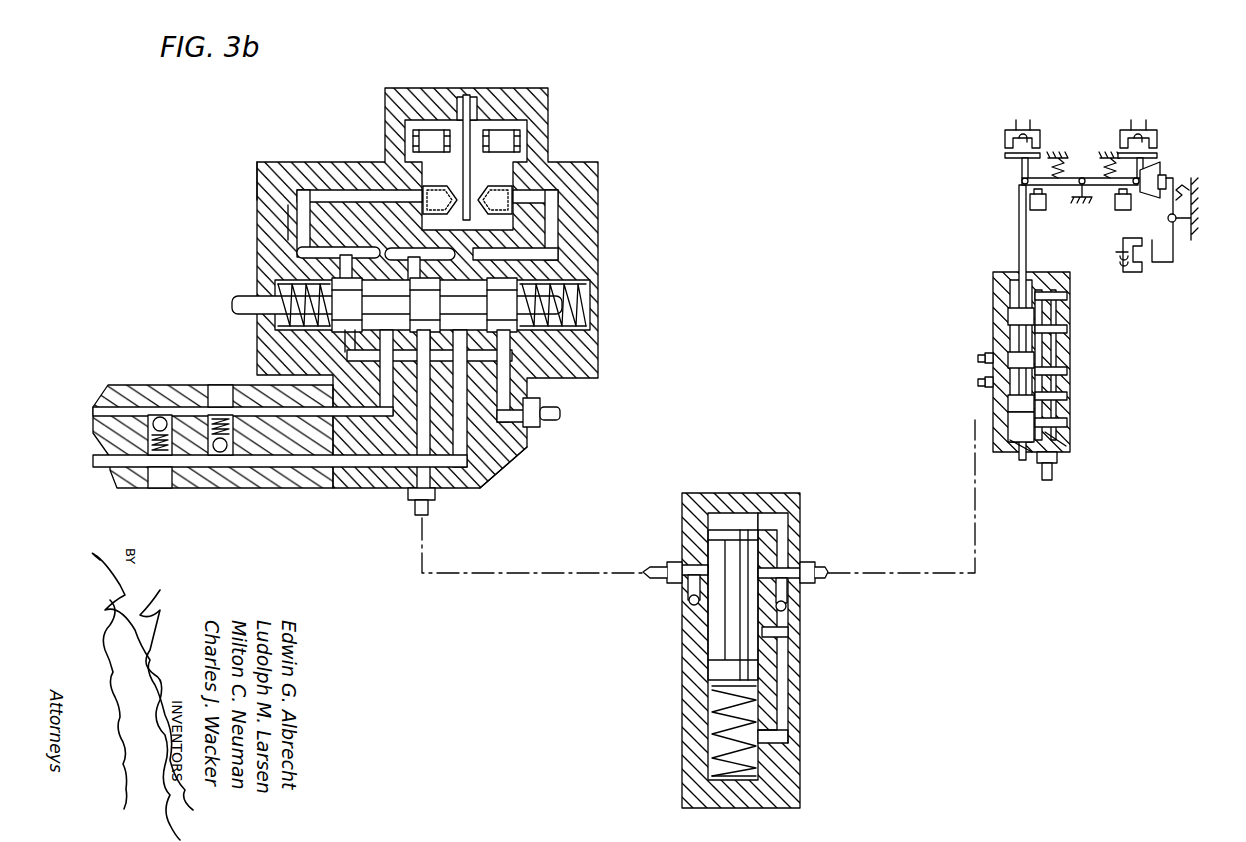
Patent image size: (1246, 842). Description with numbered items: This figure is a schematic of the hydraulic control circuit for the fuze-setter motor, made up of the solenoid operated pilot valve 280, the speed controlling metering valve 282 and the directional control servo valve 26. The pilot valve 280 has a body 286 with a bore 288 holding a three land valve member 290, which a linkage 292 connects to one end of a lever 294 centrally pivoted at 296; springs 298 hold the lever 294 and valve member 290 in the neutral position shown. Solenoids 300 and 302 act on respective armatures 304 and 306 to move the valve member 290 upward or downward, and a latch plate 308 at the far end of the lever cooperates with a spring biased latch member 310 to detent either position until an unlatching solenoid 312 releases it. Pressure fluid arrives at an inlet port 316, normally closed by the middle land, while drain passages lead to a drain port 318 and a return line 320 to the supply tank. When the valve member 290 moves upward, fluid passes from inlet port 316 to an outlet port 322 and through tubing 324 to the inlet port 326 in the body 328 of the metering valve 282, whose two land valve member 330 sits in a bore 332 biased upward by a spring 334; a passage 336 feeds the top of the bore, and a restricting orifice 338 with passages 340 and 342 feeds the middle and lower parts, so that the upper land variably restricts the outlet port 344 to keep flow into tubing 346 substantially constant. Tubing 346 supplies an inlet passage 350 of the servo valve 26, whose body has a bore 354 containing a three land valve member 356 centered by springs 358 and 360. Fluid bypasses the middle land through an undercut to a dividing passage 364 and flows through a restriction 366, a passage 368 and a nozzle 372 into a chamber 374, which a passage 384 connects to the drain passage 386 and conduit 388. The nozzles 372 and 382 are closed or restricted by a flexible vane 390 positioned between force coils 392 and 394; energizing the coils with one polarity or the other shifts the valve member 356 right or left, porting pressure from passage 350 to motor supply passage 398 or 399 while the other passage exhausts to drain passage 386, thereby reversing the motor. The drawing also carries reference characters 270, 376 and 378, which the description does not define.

The servo valve 26 is at (317, 120).
The valve housing 270 is at (262, 178).
The pilot valve 280 is at (1007, 261).
The speed controlling metering valve 282 is at (670, 728).
The body 286 is at (1062, 272).
The bore 288 is at (1025, 440).
The three land valve member 290 is at (1040, 364).
The linkage 292 is at (1019, 205).
The lever 294 is at (1078, 190).
The pivot 296 is at (1083, 176).
The springs 298 is at (1055, 155).
The solenoid 300 is at (1005, 128).
The solenoid 302 is at (1158, 128).
The armature 304 is at (1005, 157).
The armature 306 is at (1150, 156).
The latch plate 308 is at (1165, 175).
The spring biased latch member 310 is at (1170, 215).
The unlatching solenoid 312 is at (1140, 271).
The inlet port 316 is at (957, 359).
The drain port 318 is at (1050, 440).
The return line 320 is at (1060, 467).
The outlet port 322 is at (982, 386).
The tubing 324 is at (977, 519).
The inlet port 326 is at (805, 560).
The body 328 is at (798, 771).
The two land valve member 330 is at (718, 665).
The bore 332 is at (697, 601).
The spring 334 is at (760, 770).
The passage 336 is at (778, 503).
The restricting orifice 338 is at (788, 606).
The passage 340 is at (782, 632).
The passage 342 is at (790, 736).
The outlet port 344 is at (690, 567).
The tubing 346 is at (419, 538).
The inlet passage 350 is at (430, 353).
The bore 354 is at (502, 305).
The three land valve member 356 is at (372, 330).
The spring 358 is at (276, 288).
The spring 360 is at (582, 318).
The dividing passage 364 is at (365, 305).
The restriction 366 is at (300, 250).
The passage 368 is at (290, 213).
The nozzle 372 is at (440, 209).
The chamber 374 is at (420, 165).
The center spool land 376 is at (442, 305).
The right pilot passage 378 is at (530, 252).
The nozzle 382 is at (495, 209).
The passage 384 is at (339, 248).
The drain passage 386 is at (500, 356).
The conduit means 388 is at (545, 411).
The flexible vane 390 is at (477, 100).
The force coil 392 is at (433, 128).
The force coil 394 is at (508, 128).
The motor supply passage 398 is at (262, 410).
The motor supply passage 399 is at (500, 450).